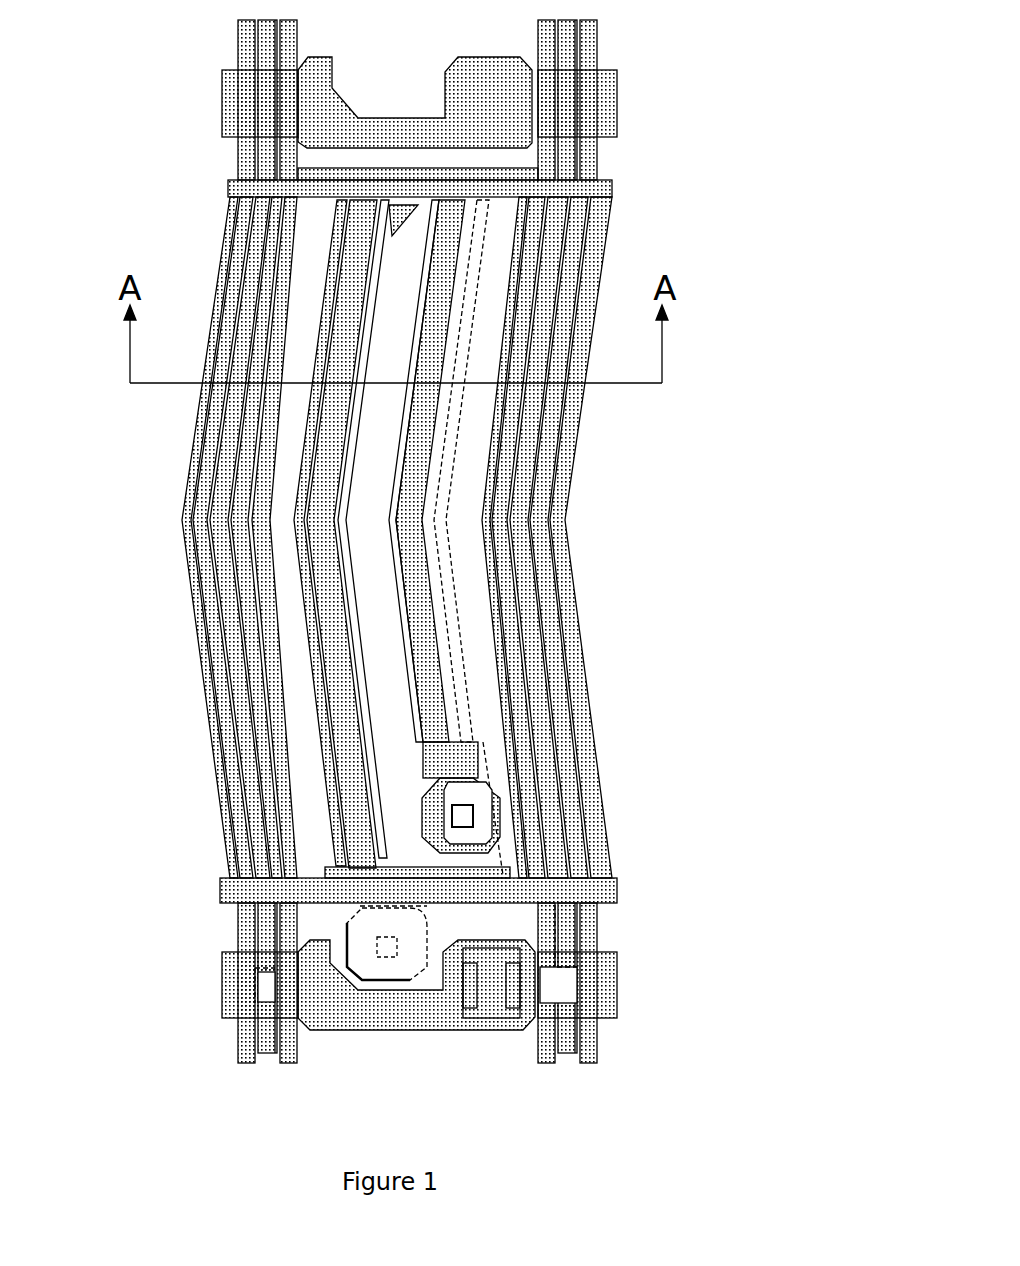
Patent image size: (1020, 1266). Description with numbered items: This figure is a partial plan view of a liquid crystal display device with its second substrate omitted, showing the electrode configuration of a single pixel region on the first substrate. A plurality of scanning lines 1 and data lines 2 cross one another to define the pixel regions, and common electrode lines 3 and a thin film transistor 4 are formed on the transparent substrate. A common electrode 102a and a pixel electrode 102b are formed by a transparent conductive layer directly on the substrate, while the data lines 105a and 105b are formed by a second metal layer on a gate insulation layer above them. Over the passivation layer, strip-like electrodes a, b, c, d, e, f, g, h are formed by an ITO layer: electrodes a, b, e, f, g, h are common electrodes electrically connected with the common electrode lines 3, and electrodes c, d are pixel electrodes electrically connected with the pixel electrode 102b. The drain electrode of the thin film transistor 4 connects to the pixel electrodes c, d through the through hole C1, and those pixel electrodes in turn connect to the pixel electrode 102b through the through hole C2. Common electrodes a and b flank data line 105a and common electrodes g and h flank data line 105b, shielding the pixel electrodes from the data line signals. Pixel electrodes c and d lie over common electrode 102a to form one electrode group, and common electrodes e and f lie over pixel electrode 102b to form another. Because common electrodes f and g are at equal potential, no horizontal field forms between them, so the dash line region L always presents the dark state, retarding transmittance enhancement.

The scanning line 1 is at (603, 987).
The data line 2 is at (567, 1040).
The common electrode line 3 is at (592, 878).
The thin film transistor 4 is at (490, 1017).
The common electrode 102a is at (318, 530).
The pixel electrode 102b is at (430, 522).
The data line 105a is at (232, 737).
The data line 105b is at (565, 685).
The through hole C1 is at (377, 960).
The through hole C2 is at (470, 815).
The dash line region L is at (510, 245).
The common electrode a is at (183, 572).
The common electrode b is at (232, 652).
The pixel electrode c is at (300, 560).
The pixel electrode d is at (340, 485).
The common electrode e is at (410, 465).
The common electrode f is at (455, 545).
The common electrode g is at (560, 642).
The common electrode h is at (565, 568).